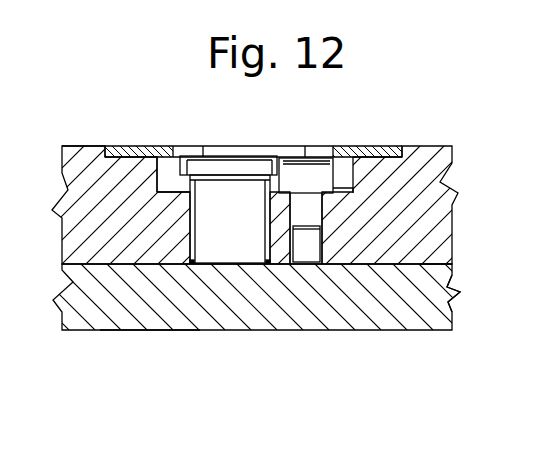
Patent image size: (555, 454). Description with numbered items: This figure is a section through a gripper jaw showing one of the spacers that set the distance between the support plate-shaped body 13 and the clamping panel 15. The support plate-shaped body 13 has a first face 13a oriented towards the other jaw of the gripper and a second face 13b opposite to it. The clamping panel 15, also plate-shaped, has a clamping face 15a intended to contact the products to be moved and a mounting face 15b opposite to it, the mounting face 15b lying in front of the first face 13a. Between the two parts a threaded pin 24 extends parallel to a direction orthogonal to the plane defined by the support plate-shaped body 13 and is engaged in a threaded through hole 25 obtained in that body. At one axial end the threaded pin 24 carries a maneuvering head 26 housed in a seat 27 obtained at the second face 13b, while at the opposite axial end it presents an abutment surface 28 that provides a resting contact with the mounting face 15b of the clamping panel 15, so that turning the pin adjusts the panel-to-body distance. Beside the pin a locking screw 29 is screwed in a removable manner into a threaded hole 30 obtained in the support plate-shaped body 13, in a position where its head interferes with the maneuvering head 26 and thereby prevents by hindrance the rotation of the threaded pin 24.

The support plate-shaped body 13 is at (427, 220).
The first face 13a is at (458, 293).
The second face 13b is at (72, 148).
The clamping panel 15 is at (412, 317).
The clamping face 15a is at (143, 330).
The mounting face 15b is at (445, 256).
The threaded pin 24 is at (190, 227).
The threaded through hole 25 is at (192, 252).
The maneuvering head 26 is at (226, 168).
The seat 27 is at (172, 162).
The abutment surface 28 is at (222, 265).
The locking screw 29 is at (313, 177).
The threaded hole 30 is at (300, 265).